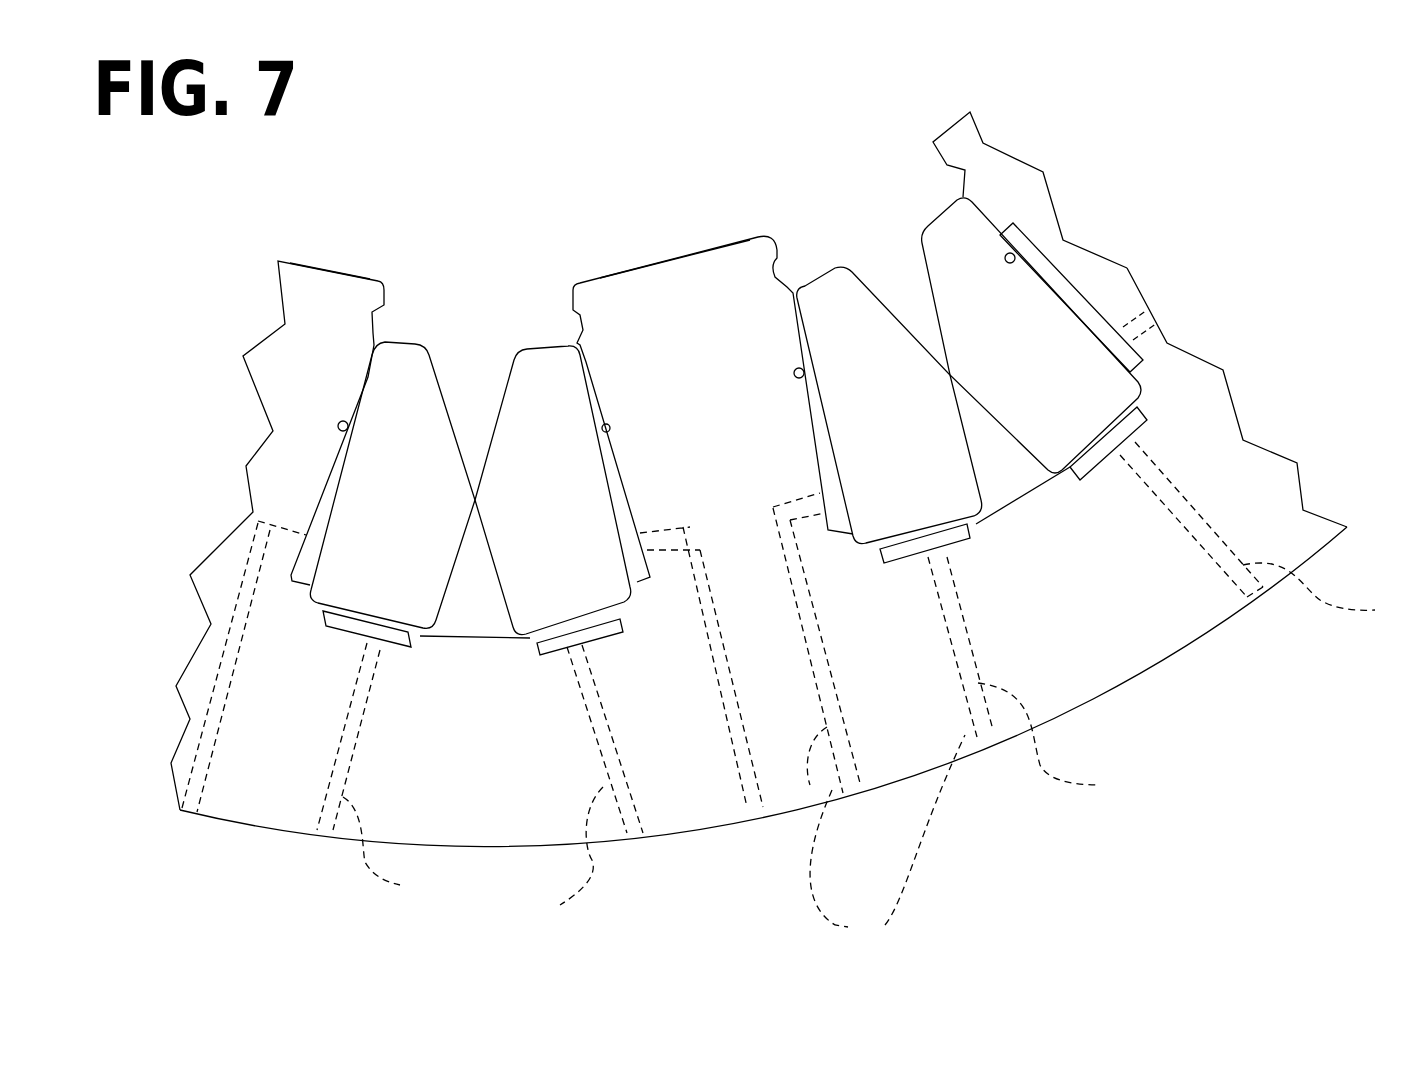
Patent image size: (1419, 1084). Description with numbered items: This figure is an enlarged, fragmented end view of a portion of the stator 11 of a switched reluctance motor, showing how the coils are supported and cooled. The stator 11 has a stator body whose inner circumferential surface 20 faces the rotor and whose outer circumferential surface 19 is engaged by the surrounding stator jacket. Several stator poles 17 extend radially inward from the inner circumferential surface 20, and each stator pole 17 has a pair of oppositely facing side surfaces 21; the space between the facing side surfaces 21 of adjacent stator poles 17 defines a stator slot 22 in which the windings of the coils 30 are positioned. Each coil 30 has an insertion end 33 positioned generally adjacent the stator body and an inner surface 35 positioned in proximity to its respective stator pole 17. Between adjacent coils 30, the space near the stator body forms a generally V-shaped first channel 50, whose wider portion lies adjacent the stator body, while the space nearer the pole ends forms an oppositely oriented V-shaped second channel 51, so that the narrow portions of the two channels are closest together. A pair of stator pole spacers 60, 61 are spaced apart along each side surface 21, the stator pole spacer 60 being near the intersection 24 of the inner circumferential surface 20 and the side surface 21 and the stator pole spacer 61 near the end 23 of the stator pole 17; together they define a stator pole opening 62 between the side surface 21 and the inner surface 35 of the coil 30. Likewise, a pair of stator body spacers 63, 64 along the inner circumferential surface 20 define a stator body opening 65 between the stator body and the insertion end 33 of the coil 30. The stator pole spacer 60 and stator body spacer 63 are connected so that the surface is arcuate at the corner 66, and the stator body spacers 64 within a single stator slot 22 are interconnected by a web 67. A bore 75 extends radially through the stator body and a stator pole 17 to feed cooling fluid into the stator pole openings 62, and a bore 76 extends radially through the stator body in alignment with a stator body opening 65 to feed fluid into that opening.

The stator 11 is at (965, 733).
The stator pole 17 is at (352, 295).
The outer circumferential surface 19 is at (698, 830).
The inner circumferential surface 20 is at (553, 640).
The side surface 21 is at (343, 421).
The stator slot 22 is at (480, 227).
The end of the stator pole 23 is at (307, 265).
The intersection 24 is at (288, 633).
The coil 30 is at (413, 352).
The insertion end 33 is at (305, 700).
The inner surface 35 is at (300, 545).
The first channel 50 is at (482, 623).
The second channel 51 is at (476, 413).
The stator pole spacer 60 is at (305, 585).
The stator pole spacer 61 is at (368, 377).
The stator pole opening 62 is at (318, 493).
The stator body spacer 63 is at (297, 724).
The stator body spacer 64 is at (410, 640).
The stator body opening 65 is at (380, 640).
The corner 66 is at (292, 607).
The web 67 is at (447, 640).
The bore 75 is at (155, 698).
The bore 76 is at (876, 742).